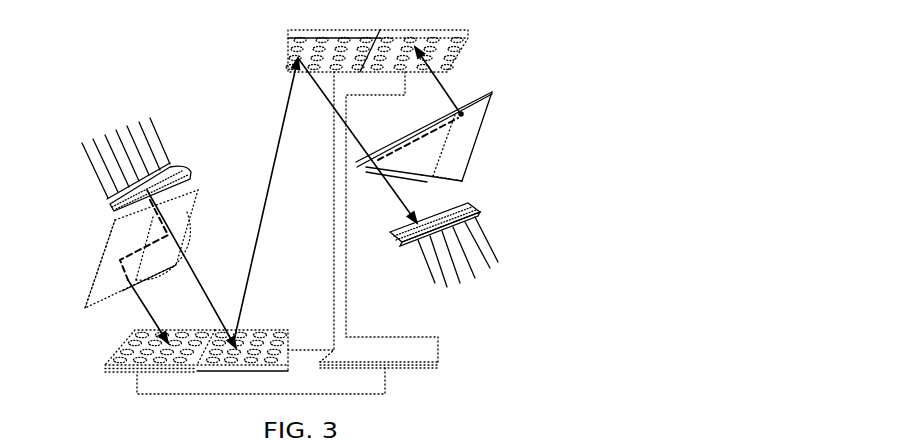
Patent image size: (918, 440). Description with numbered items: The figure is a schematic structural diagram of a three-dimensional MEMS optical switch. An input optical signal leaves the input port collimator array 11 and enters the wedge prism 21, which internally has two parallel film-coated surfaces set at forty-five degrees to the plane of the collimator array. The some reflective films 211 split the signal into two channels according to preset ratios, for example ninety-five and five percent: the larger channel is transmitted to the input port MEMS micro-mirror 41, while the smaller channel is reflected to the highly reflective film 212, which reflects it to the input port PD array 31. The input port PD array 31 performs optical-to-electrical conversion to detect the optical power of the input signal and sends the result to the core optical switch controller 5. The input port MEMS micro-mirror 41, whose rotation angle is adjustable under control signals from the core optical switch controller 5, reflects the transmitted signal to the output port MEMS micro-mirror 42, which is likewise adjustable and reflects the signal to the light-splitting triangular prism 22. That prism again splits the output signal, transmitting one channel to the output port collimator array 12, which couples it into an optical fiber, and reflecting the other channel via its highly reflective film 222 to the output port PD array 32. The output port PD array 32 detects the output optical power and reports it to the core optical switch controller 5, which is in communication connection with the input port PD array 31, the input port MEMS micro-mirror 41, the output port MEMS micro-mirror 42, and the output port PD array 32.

The core optical switch controller 5 is at (323, 233).
The input port collimator array 11 is at (112, 164).
The output port collimator array 12 is at (477, 232).
The wedge prism 21 is at (114, 248).
The some reflective films 211 is at (185, 233).
The highly reflective film 212 is at (68, 264).
The light-splitting triangular prism 22 is at (468, 119).
The highly reflective film 222 is at (458, 150).
The input port PD array 31 is at (128, 350).
The output port PD array 32 is at (458, 38).
The input port MEMS micro-mirror 41 is at (260, 332).
The output port MEMS micro-mirror 42 is at (296, 38).